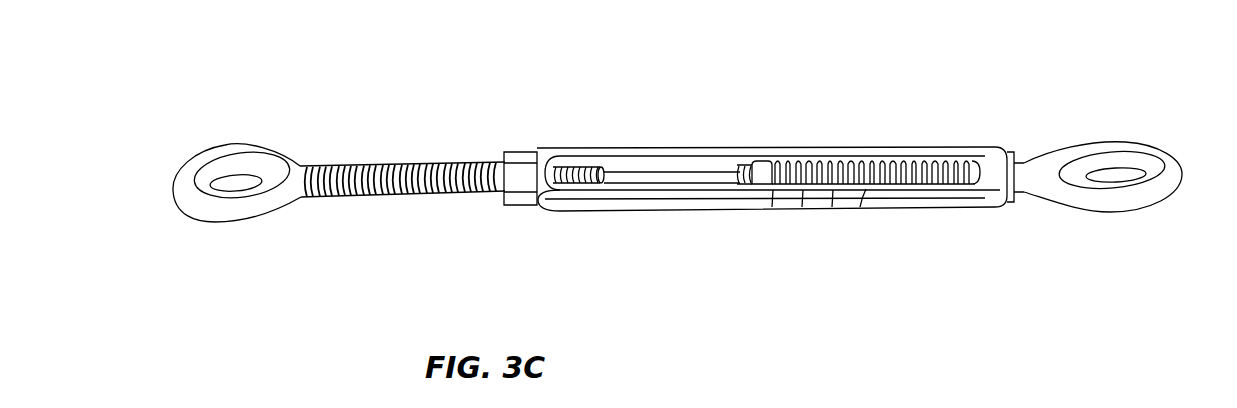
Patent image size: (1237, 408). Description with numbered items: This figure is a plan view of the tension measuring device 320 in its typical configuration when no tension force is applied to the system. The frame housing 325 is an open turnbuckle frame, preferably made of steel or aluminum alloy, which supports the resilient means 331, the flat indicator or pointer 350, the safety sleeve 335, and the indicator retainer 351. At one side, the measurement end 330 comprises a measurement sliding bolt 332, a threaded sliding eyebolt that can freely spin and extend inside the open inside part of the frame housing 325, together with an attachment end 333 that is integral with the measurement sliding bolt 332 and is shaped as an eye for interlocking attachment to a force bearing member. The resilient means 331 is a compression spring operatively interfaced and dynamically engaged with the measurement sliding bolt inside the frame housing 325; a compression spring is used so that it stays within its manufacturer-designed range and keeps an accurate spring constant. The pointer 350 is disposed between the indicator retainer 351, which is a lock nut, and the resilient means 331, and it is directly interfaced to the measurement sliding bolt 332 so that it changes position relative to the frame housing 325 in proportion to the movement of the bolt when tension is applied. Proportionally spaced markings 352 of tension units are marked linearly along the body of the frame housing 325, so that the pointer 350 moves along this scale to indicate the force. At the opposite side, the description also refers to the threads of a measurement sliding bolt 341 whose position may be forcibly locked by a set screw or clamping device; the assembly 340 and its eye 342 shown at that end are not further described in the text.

The device 320 is at (682, 107).
The frame housing 325 is at (678, 208).
The measurement end 330 is at (918, 105).
The resilient means 331 is at (936, 150).
The measurement sliding bolt 332 is at (1013, 197).
The attachment end 333 is at (1117, 213).
The safety sleeve 335 is at (886, 160).
The first eye bolt assembly 340 is at (553, 107).
The measurement sliding bolt 341 is at (372, 200).
The eye of first eye bolt 342 is at (230, 202).
The pointer 350 is at (777, 155).
The indicator retainer 351 is at (762, 158).
The proportionally spaced markings 352 is at (863, 208).